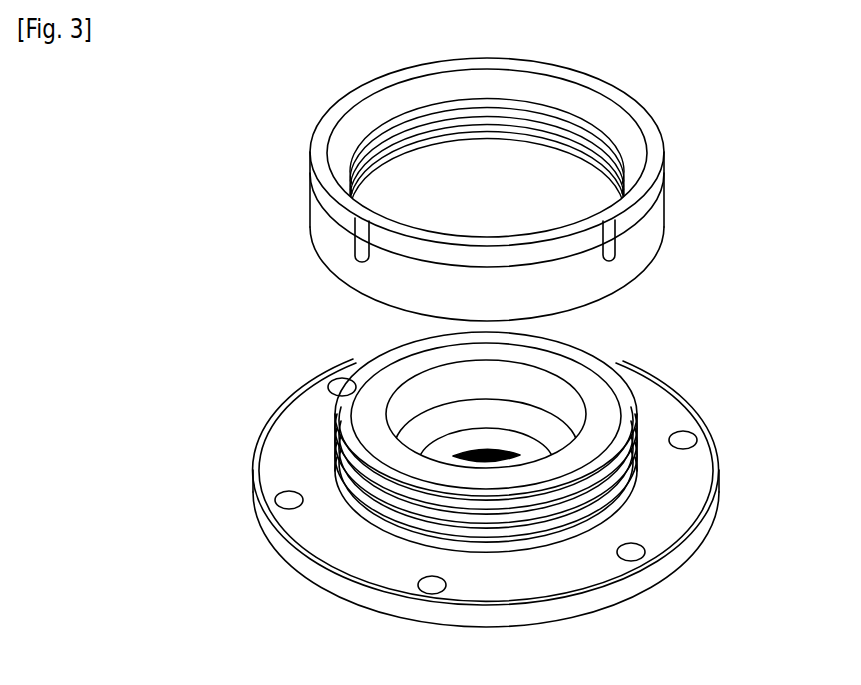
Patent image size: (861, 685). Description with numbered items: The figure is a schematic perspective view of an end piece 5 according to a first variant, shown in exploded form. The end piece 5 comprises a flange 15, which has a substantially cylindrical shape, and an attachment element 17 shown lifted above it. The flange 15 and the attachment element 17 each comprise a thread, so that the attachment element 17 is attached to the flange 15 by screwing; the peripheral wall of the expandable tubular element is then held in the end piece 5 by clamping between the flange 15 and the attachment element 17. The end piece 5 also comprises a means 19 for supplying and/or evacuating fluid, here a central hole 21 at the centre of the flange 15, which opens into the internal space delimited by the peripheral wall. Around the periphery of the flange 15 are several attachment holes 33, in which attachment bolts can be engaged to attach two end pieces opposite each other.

The end piece 5 is at (268, 318).
The flange 15 is at (655, 485).
The attachment element 17 is at (635, 153).
The means for supplying and/or evacuating fluid 19 is at (553, 447).
The central hole 21 is at (486, 431).
The attachment holes 33 is at (641, 552).